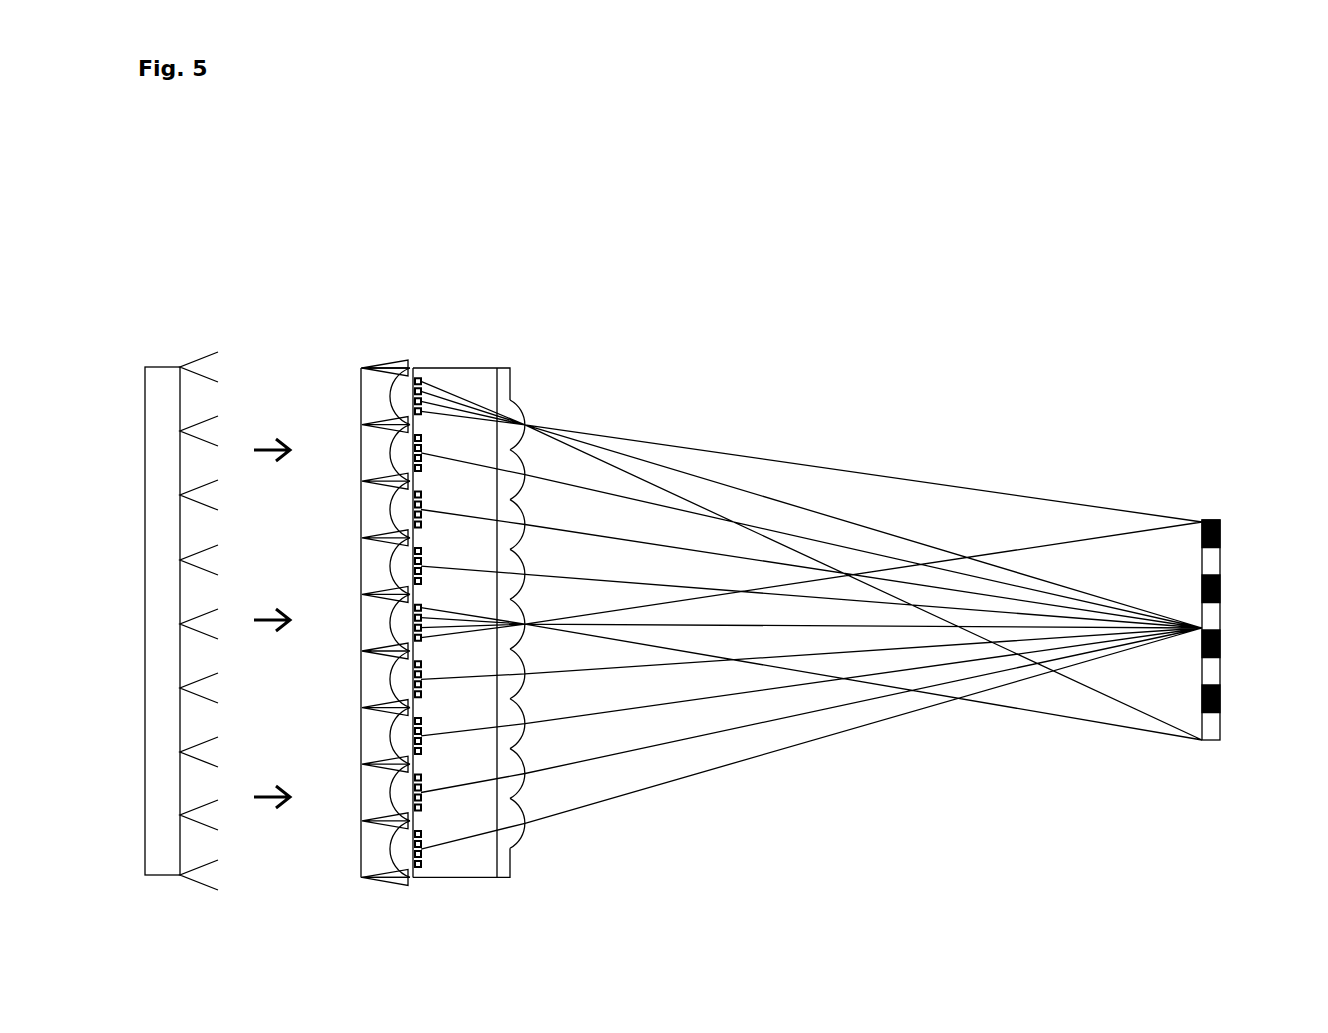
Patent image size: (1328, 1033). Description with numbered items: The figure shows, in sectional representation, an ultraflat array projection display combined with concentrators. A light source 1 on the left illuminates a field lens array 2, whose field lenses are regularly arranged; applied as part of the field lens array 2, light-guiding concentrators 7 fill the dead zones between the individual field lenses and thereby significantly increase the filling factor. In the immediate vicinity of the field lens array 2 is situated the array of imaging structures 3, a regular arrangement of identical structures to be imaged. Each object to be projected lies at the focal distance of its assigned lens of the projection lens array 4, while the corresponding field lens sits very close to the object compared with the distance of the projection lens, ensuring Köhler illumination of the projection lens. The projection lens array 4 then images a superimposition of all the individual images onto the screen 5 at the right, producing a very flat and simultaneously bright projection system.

The light source 1 is at (147, 367).
The concentrators 7 is at (361, 368).
The field lens array 2 is at (400, 370).
The array of imaging structures 3 is at (440, 380).
The projection lens array 4 is at (522, 405).
The screen 5 is at (1220, 522).